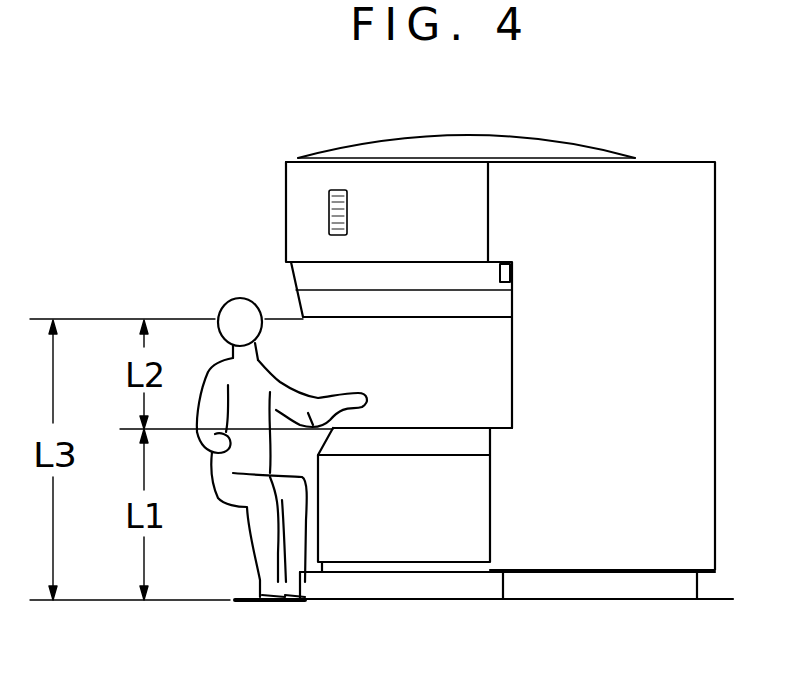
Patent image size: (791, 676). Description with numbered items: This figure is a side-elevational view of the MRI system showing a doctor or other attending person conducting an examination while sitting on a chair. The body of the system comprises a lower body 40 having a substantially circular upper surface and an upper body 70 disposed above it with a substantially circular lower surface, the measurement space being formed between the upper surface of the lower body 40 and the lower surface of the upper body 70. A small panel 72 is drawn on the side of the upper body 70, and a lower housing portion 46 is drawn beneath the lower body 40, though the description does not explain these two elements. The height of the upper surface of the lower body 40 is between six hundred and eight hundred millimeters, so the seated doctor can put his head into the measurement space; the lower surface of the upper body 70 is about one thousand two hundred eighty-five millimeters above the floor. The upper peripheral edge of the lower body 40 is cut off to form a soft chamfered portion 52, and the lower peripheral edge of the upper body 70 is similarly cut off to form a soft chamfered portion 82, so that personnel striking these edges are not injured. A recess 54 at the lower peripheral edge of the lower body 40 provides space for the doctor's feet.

The upper body 70 is at (440, 183).
The display panel 72 is at (328, 205).
The chamfered portion 82 is at (307, 300).
The lower body 40 is at (437, 428).
The chamfered portion 52 is at (477, 442).
The lower housing 46 is at (350, 542).
The recess 54 is at (425, 585).